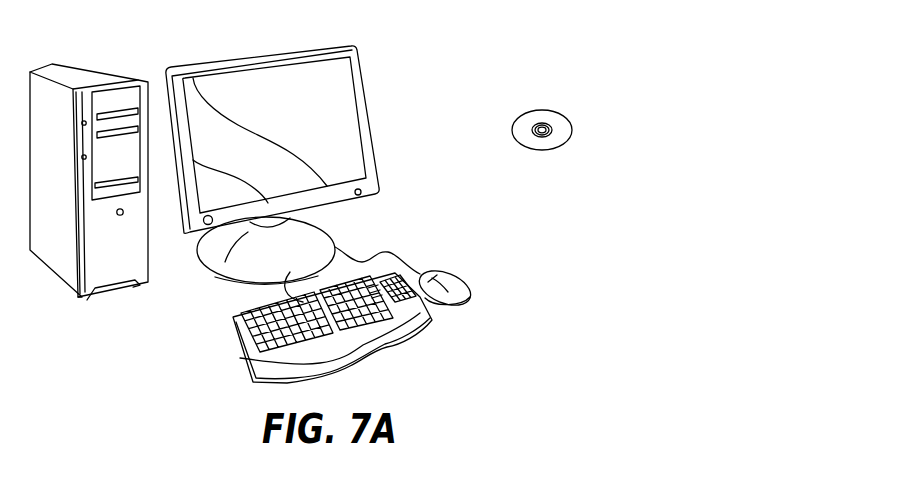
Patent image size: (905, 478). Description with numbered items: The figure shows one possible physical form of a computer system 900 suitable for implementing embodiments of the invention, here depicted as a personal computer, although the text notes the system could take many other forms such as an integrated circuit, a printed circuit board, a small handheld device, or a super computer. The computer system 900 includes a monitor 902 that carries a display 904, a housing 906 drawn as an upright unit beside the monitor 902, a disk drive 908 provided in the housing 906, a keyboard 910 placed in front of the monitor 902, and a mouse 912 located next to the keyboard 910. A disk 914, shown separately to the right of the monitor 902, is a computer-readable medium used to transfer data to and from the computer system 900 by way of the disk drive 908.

The computer system 900 is at (475, 32).
The monitor 902 is at (372, 138).
The display screen 904 is at (330, 82).
The computer tower / system unit 906 is at (77, 72).
The disk drive 908 is at (133, 178).
The keyboard 910 is at (240, 353).
The mouse 912 is at (467, 280).
The removable storage disc 914 is at (555, 110).